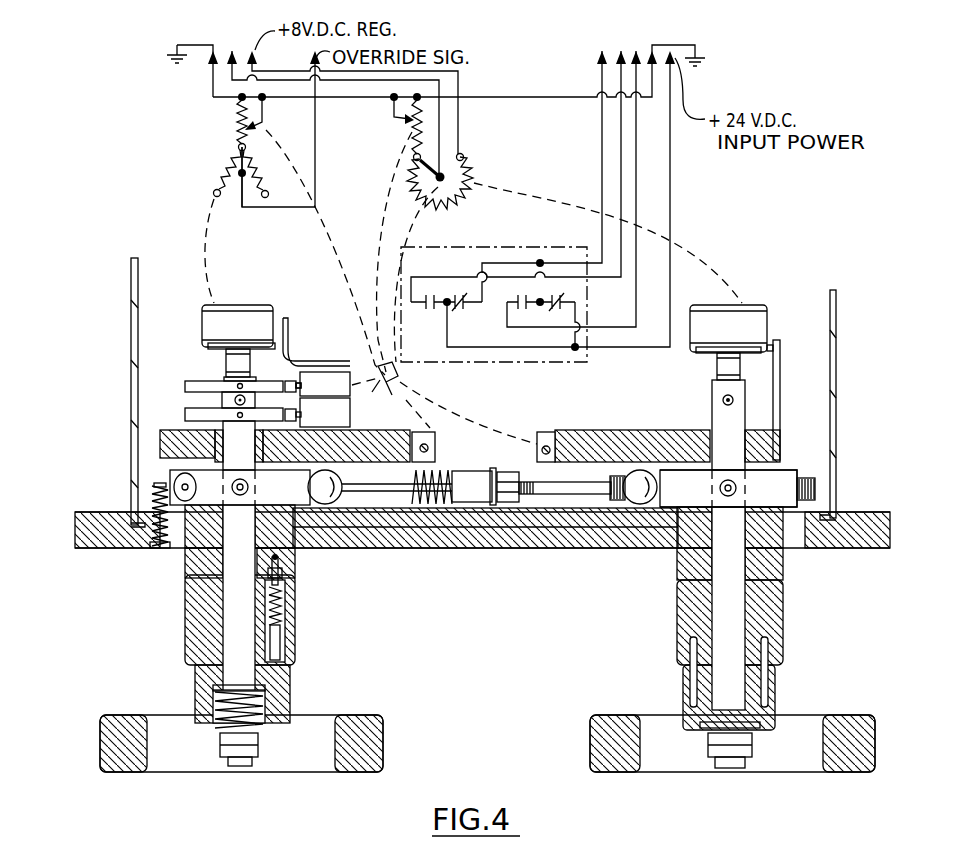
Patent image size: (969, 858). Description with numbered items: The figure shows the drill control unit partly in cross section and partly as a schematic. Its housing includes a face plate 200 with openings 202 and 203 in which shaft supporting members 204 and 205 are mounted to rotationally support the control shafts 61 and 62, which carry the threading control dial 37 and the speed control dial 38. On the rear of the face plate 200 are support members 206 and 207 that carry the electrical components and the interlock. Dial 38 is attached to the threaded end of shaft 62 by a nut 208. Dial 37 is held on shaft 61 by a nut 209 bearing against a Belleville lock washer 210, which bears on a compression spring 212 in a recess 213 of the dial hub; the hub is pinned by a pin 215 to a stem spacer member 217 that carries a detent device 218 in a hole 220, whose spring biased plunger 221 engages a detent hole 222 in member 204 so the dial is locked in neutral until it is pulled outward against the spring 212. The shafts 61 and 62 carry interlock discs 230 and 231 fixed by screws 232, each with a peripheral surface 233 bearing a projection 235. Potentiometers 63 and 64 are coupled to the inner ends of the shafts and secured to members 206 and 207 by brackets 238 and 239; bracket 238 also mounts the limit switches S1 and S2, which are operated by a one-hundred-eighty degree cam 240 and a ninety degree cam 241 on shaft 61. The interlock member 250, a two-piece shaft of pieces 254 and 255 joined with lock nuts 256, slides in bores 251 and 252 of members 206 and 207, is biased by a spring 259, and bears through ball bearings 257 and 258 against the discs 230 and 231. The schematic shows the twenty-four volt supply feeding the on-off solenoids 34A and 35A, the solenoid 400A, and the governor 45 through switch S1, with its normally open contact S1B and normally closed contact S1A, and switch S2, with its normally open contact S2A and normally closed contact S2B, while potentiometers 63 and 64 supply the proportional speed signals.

The governor 45 is at (232, 50).
The on-off solenoid 34A is at (621, 50).
The on-off solenoid 35A is at (637, 52).
The solenoid 400A is at (602, 58).
The potentiometer 63 is at (205, 172).
The potentiometer 64 is at (465, 163).
The limit switch S1 is at (325, 412).
The limit switch S2 is at (325, 384).
The normally closed contact S1A is at (462, 312).
The normally open contact S1B is at (430, 292).
The normally open contact S2A is at (565, 298).
The normally closed contact S2B is at (528, 283).
The face plate 200 is at (567, 530).
The opening 202 is at (192, 552).
The opening 203 is at (680, 562).
The shaft supporting member 204 is at (190, 563).
The shaft supporting member 205 is at (786, 580).
The support member 206 is at (352, 415).
The support member 207 is at (560, 438).
The nut 208 is at (746, 752).
The nut 209 is at (257, 762).
The Belleville lock washer 210 is at (260, 738).
The compression spring 212 is at (290, 713).
The recess 213 is at (268, 700).
The pin 215 is at (200, 675).
The stem spacer member 217 is at (185, 635).
The detent device 218 is at (283, 605).
The hole 220 is at (281, 650).
The spring biased plunger 221 is at (285, 575).
The detent hole 222 is at (280, 559).
The interlock disc 230 is at (170, 478).
The interlock disc 231 is at (783, 470).
The screws 232 is at (245, 483).
The peripheral surface 233 is at (170, 487).
The projection 235 is at (172, 468).
The bracket 238 is at (286, 328).
The bracket 239 is at (778, 338).
The switch actuating cam 240 is at (187, 410).
The switch actuating cam 241 is at (188, 380).
The interlock member 250 is at (483, 508).
The bore 251 is at (386, 497).
The bore 252 is at (576, 466).
The piece 254 is at (428, 506).
The piece 255 is at (538, 497).
The lock nuts 256 is at (517, 470).
The ball bearing 257 is at (334, 506).
The ball bearing 258 is at (640, 506).
The spring 259 is at (436, 462).
The control shaft 61 is at (230, 590).
The control shaft 62 is at (720, 612).
The dial 37 is at (197, 780).
The dial 38 is at (712, 782).